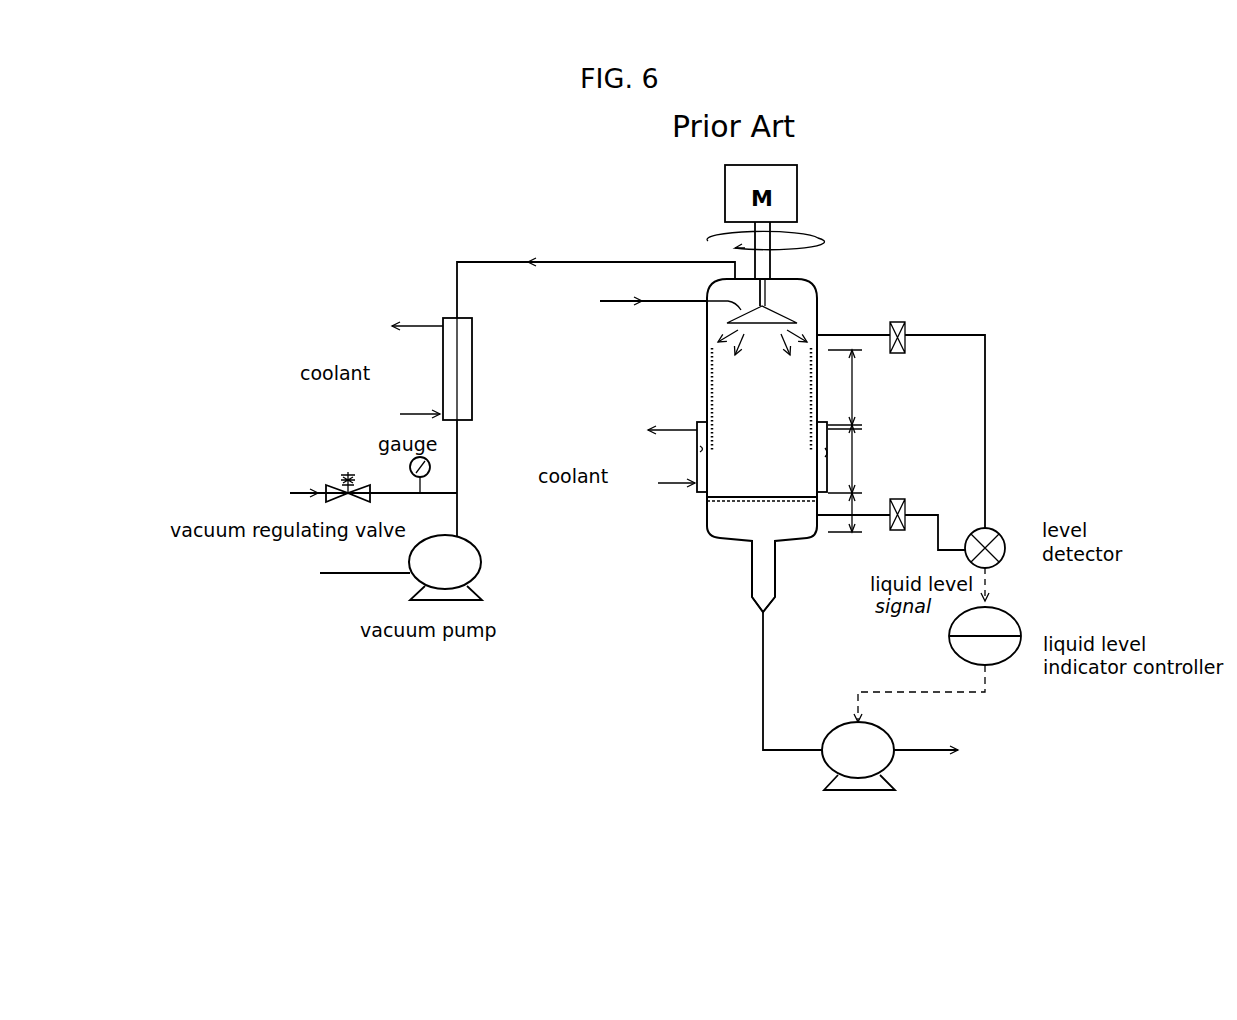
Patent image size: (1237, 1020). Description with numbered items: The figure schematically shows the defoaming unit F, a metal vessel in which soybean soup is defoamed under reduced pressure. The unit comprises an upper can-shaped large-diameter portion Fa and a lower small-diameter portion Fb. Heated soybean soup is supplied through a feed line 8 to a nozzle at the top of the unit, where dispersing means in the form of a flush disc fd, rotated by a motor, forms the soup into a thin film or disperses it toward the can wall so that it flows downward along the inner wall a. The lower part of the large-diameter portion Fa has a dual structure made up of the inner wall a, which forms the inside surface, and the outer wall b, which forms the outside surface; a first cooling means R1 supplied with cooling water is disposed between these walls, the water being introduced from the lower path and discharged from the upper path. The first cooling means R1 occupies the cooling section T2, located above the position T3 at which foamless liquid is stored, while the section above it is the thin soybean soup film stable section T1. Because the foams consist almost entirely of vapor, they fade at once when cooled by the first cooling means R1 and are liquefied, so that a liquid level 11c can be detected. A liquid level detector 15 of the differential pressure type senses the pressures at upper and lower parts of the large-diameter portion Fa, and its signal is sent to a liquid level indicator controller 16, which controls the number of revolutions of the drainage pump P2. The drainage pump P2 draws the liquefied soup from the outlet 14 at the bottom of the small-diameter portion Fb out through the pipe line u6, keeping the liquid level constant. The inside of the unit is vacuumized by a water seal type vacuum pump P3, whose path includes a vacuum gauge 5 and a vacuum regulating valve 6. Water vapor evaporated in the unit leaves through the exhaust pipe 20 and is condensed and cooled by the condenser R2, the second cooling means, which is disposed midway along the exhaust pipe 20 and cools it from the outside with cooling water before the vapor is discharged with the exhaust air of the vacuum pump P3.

The exhaust pipe 20 is at (482, 258).
The feed pipe 8 is at (622, 300).
The defoaming unit F is at (828, 300).
The dispersing means (flush disc) fd is at (790, 320).
The condenser R2 is at (443, 362).
The large-diameter portion Fa is at (695, 348).
The first cooling means R1 is at (697, 428).
The liquid level 11c is at (743, 495).
The outer wall b is at (702, 448).
The inner wall a is at (709, 474).
The thin soybean soup film stable section T1 is at (854, 387).
The cooling section T2 is at (854, 459).
The liquid storage position T3 is at (854, 512).
The vacuum regulating valve 6 is at (328, 489).
The vacuum gauge 5 is at (410, 464).
The vacuum pump P3 is at (465, 557).
The small-diameter portion Fb is at (750, 568).
The outlet 14 is at (765, 613).
The pipe line u6 is at (762, 659).
The liquid level detector 15 is at (1003, 536).
The liquid level indicator controller 16 is at (1013, 620).
The drainage pump P2 is at (838, 737).